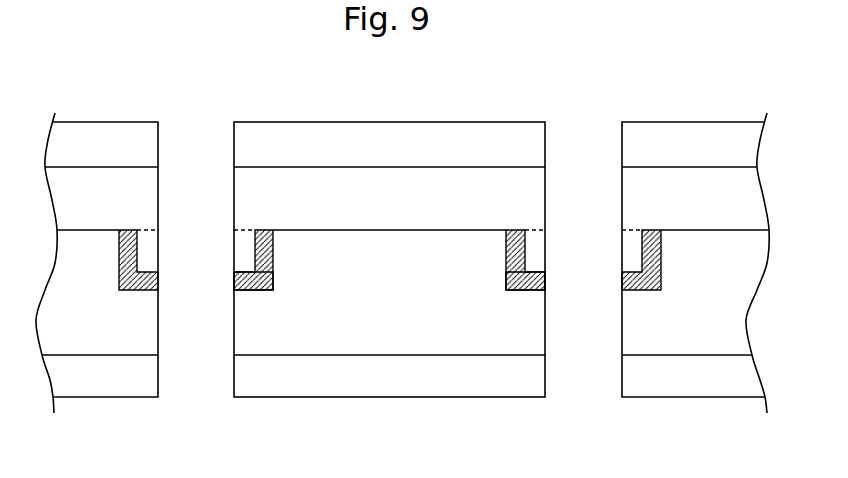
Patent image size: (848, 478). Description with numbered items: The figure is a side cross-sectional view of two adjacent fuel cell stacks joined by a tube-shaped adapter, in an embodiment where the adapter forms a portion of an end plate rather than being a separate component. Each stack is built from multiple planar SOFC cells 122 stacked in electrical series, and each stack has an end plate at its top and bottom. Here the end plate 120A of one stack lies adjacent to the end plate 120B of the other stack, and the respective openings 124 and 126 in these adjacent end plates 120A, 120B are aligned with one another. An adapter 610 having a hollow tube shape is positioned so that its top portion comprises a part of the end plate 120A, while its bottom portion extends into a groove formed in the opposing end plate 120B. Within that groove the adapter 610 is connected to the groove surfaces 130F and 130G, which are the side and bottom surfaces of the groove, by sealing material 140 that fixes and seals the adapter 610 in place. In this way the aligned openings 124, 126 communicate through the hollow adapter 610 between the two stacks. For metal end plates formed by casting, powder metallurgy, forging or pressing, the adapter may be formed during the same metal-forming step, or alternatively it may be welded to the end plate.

The planar SOFC cell 122 is at (106, 138).
The end plate 120A is at (98, 193).
The end plate 120B is at (97, 343).
The opening 124 is at (596, 171).
The opening 126 is at (210, 171).
The adapter 610 is at (223, 242).
The sealing material 140 is at (272, 262).
The groove surface 130F is at (502, 231).
The groove surface 130G is at (545, 295).